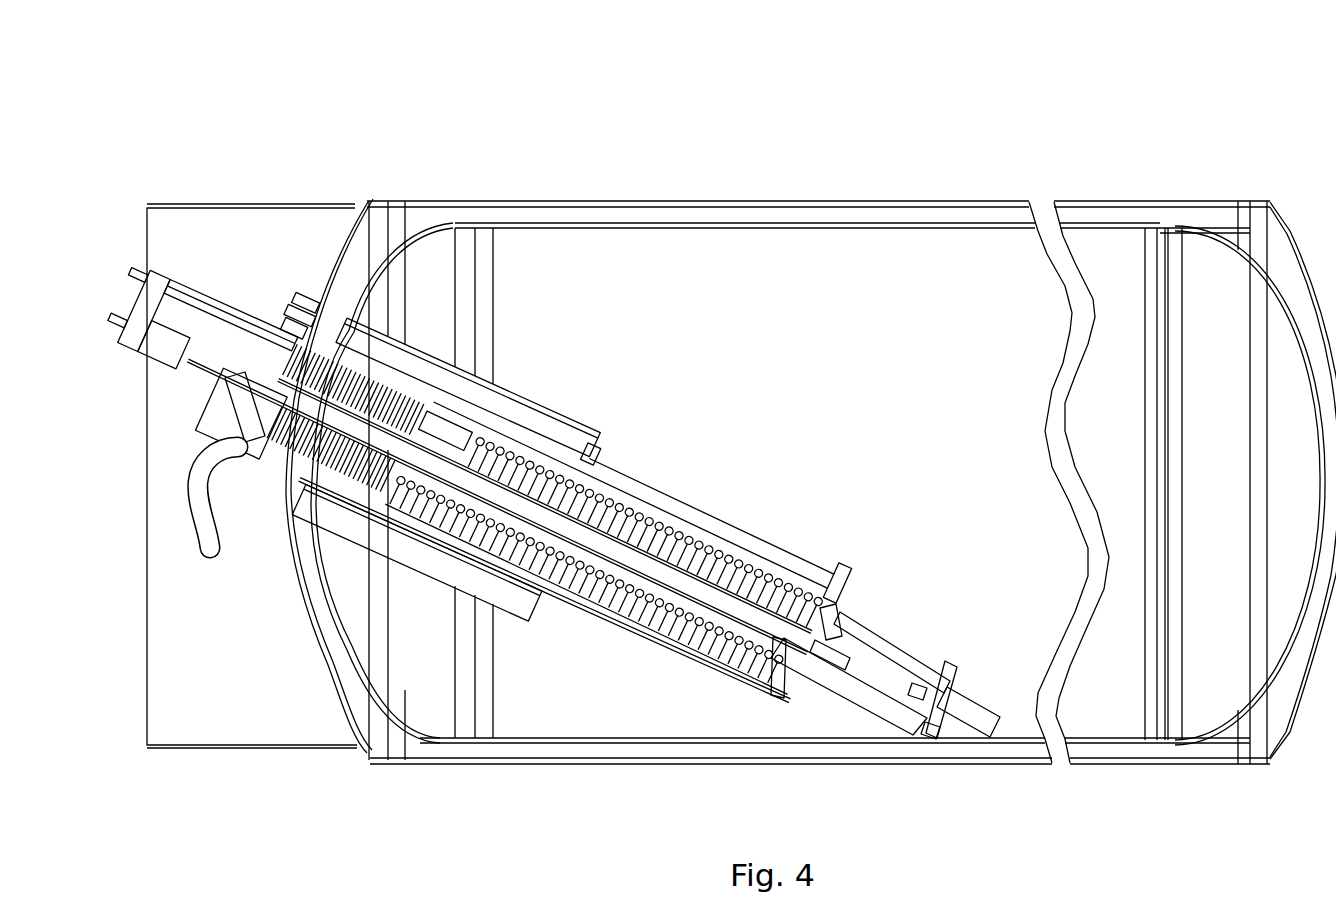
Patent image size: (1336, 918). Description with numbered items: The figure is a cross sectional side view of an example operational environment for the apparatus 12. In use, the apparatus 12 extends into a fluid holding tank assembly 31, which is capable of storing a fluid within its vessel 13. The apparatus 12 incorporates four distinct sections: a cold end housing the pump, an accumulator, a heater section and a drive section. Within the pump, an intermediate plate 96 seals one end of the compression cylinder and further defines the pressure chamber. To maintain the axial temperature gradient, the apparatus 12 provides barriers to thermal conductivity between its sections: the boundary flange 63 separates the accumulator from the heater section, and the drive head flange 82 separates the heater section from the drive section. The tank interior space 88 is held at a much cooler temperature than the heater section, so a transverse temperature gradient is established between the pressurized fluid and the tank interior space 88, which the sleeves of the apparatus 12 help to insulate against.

The fluid holding tank assembly 31 is at (645, 180).
The tank interior space 88 is at (830, 345).
The vessel 13 is at (647, 740).
The drive head flange 82 is at (283, 327).
The boundary flange 63 is at (404, 422).
The intermediate plate 96 is at (804, 662).
The apparatus 12 is at (868, 618).